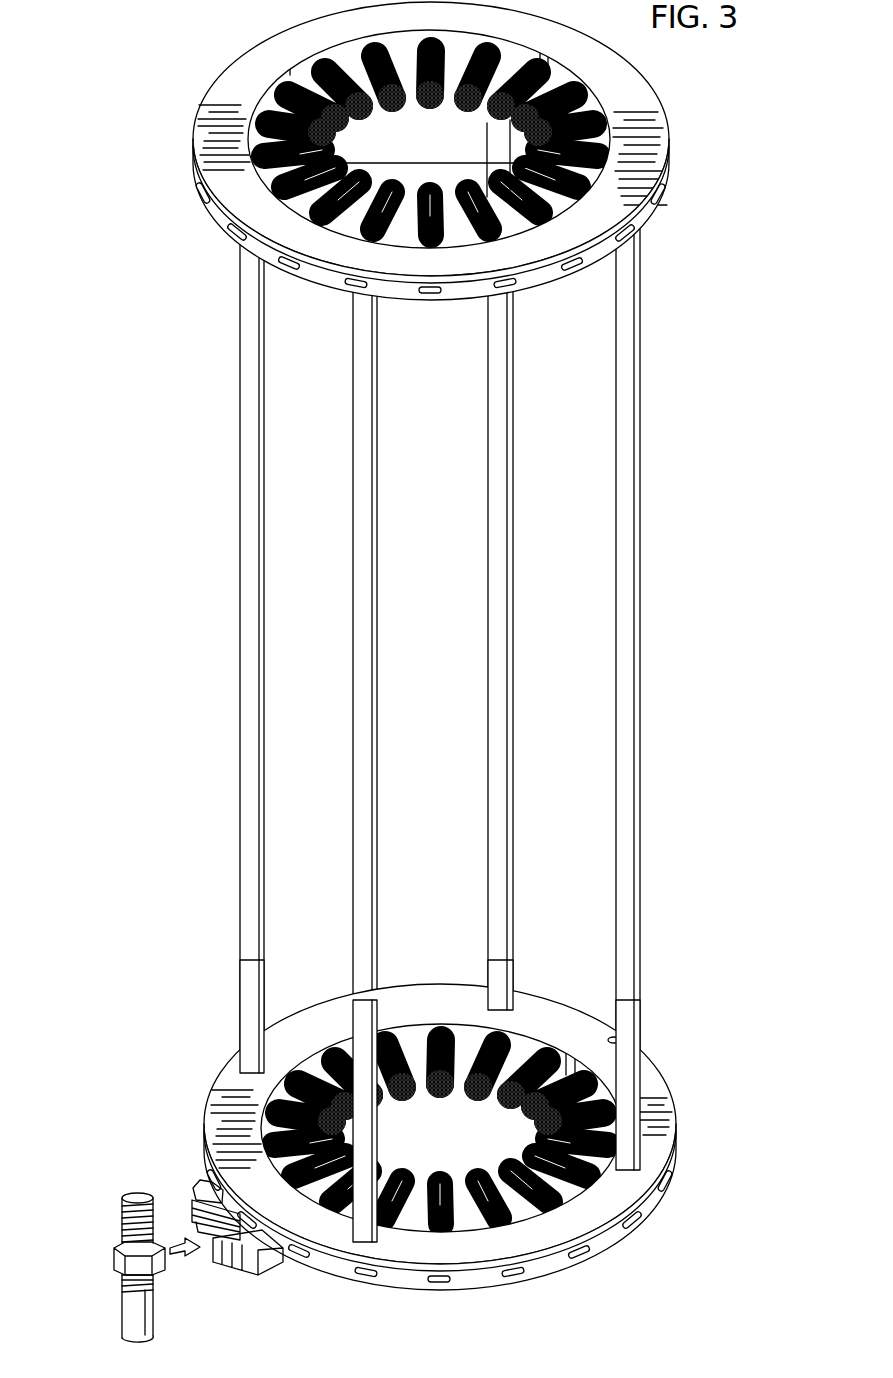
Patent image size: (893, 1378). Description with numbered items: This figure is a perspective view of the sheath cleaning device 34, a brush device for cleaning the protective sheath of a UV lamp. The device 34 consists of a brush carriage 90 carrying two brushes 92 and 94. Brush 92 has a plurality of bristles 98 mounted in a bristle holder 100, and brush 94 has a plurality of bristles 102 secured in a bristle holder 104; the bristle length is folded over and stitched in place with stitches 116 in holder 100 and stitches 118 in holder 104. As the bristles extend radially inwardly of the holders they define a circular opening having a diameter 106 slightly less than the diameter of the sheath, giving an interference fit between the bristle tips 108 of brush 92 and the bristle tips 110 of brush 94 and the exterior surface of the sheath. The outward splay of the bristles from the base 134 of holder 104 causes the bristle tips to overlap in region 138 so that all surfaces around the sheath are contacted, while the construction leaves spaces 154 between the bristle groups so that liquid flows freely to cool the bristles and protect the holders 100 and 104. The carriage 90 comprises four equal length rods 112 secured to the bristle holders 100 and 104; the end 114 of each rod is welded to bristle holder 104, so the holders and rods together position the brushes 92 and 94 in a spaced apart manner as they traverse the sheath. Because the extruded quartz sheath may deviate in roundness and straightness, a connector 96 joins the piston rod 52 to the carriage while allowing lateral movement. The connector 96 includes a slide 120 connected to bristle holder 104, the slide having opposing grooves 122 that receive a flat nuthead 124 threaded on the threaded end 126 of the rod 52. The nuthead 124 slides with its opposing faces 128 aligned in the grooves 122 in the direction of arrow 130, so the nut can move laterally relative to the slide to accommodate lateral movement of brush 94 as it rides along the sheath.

The sheath cleaning device 34 is at (664, 366).
The piston rod 52 is at (130, 1311).
The brush carriage 90 is at (670, 613).
The brush 92 is at (484, 46).
The brush 94 is at (446, 1031).
The connector 96 is at (224, 1324).
The bristles 98 is at (384, 62).
The bristle holder 100 is at (281, 47).
The bristles 102 is at (518, 1047).
The bristle holder 104 is at (650, 1095).
The diameter 106 is at (463, 167).
The bristle tips 108 is at (426, 108).
The bristle tips 110 is at (380, 1083).
The equal length rods 112 is at (622, 557).
The rod end 114 is at (642, 1163).
The stitches 116 is at (638, 232).
The stitches 118 is at (634, 1230).
The slide 120 is at (203, 1180).
The opposing grooves 122 is at (190, 1218).
The flat nuthead 124 is at (112, 1250).
The threaded end 126 is at (122, 1222).
The opposing faces 128 is at (150, 1268).
The arrow 130 is at (200, 1260).
The base 134 is at (390, 1025).
The overlap region 138 is at (446, 1108).
The spaces 154 is at (612, 1037).